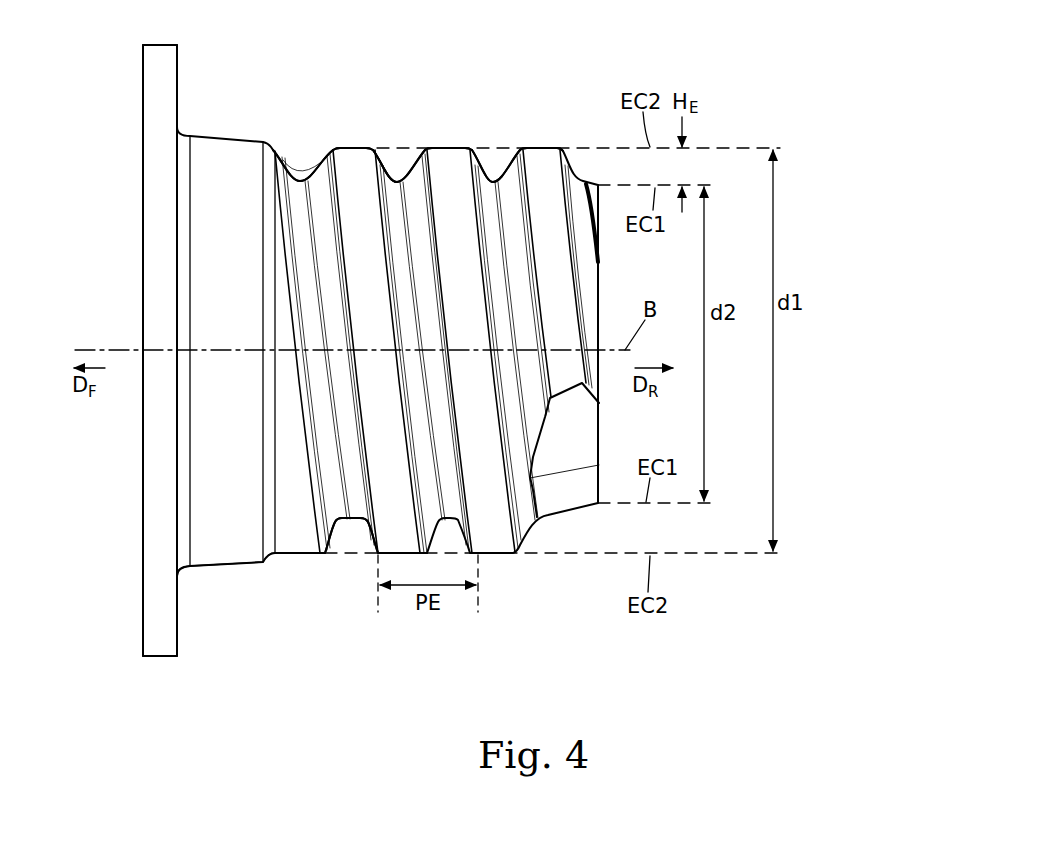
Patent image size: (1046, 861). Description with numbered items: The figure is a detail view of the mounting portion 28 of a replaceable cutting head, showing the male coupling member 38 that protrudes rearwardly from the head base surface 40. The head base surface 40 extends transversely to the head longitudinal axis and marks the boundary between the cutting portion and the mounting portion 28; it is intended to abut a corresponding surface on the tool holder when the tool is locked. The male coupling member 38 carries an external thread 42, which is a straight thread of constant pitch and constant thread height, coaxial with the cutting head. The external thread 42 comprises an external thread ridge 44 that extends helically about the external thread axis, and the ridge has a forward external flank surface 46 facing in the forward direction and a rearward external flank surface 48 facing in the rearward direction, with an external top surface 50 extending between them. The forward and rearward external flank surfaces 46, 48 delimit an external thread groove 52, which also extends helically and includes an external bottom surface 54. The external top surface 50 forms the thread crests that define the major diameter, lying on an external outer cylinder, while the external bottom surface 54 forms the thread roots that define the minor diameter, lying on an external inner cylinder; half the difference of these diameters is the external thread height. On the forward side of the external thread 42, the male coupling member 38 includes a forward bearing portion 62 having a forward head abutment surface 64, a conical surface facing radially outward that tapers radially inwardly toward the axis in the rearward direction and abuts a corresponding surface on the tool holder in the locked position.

The mounting portion 28 is at (430, 342).
The male coupling member 38 is at (526, 574).
The head base surface 40 is at (178, 73).
The external thread 42 is at (388, 482).
The external thread ridge 44 is at (449, 139).
The forward external flank surface 46 is at (310, 172).
The rearward external flank surface 48 is at (382, 147).
The external top surface 50 is at (359, 147).
The external thread groove 52 is at (407, 166).
The external bottom surface 54 is at (299, 179).
The forward bearing portion 62 is at (236, 616).
The forward head abutment surface 64 is at (223, 136).